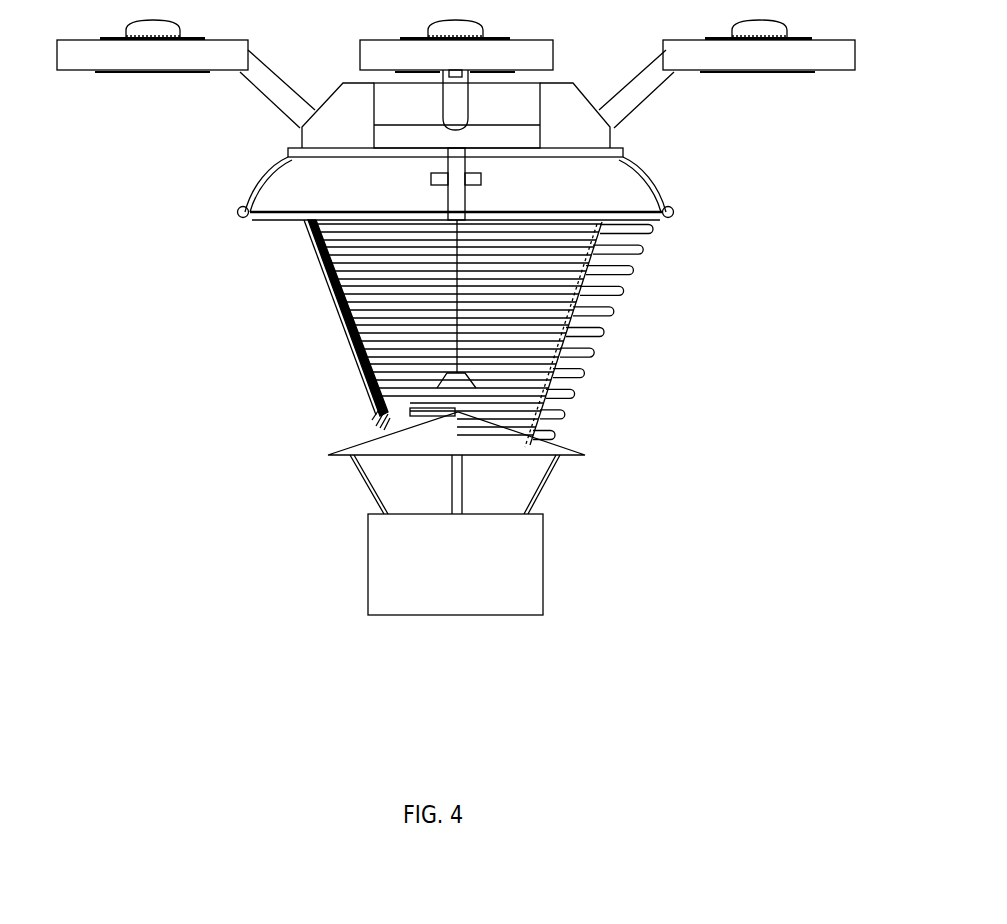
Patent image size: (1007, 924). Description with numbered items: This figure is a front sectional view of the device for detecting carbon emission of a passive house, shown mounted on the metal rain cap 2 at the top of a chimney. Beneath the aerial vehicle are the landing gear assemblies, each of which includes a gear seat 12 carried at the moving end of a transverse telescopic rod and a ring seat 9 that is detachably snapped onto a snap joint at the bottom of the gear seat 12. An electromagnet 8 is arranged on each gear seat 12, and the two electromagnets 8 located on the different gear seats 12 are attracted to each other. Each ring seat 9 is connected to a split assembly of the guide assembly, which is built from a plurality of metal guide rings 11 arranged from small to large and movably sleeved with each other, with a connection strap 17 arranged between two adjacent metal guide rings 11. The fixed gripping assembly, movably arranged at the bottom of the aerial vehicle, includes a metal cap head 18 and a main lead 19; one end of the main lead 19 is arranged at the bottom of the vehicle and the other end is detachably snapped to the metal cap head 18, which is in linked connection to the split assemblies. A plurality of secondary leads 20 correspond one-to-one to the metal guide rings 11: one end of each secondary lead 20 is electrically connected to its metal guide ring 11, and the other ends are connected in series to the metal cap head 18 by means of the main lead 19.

The metal rain cap 2 is at (433, 440).
The electromagnet 8 is at (478, 173).
The ring seat 9 is at (627, 213).
The metal guide ring 11 is at (610, 301).
The gear seat 12 is at (655, 175).
The connection strap 17 is at (562, 330).
The metal cap head 18 is at (448, 397).
The main lead 19 is at (453, 338).
The secondary lead 20 is at (340, 318).